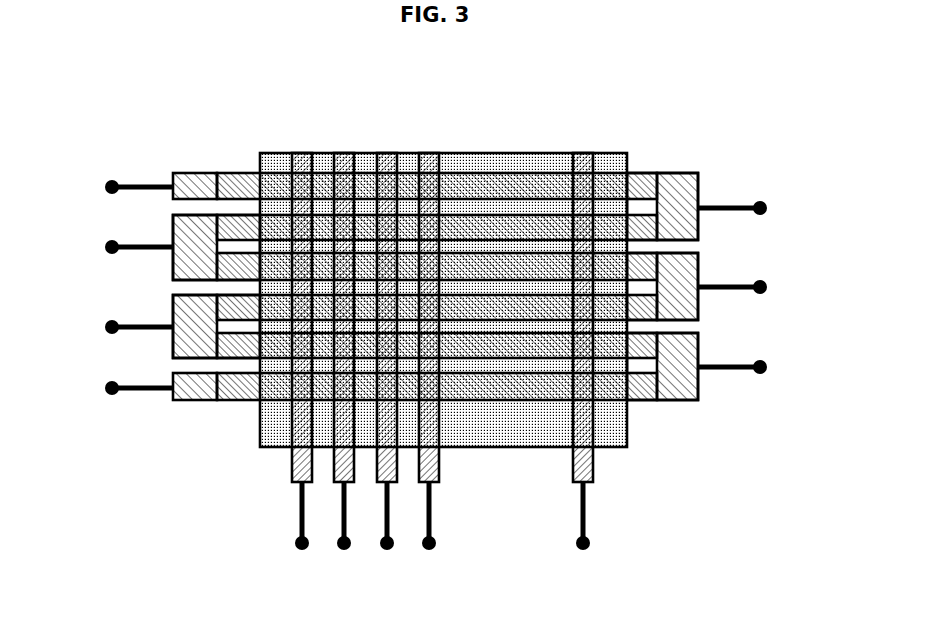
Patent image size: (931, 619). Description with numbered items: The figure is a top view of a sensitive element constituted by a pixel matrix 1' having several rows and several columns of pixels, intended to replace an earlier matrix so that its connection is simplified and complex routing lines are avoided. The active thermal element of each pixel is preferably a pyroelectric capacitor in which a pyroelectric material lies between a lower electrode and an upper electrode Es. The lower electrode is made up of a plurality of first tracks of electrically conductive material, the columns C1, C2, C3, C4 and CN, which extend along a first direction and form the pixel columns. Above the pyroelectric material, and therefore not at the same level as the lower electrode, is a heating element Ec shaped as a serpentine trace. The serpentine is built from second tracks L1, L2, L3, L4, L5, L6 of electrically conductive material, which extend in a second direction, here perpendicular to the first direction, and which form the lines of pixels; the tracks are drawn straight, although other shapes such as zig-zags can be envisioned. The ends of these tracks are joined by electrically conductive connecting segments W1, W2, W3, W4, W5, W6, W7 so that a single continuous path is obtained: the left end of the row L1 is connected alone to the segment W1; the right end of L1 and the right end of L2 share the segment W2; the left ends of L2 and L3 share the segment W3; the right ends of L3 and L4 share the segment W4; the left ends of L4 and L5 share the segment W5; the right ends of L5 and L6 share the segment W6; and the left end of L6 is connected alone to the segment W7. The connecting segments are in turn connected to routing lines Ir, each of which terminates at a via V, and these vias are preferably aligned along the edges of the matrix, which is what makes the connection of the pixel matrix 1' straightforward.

The pixel matrix 1' is at (435, 320).
The heating element Ec is at (262, 171).
The upper electrode Es is at (496, 432).
The connecting segment W1 is at (185, 196).
The connecting segment W2 is at (667, 217).
The connecting segment W3 is at (185, 256).
The connecting segment W4 is at (667, 296).
The connecting segment W5 is at (185, 336).
The connecting segment W6 is at (667, 376).
The connecting segment W7 is at (185, 396).
The track L1 is at (229, 196).
The track L2 is at (229, 237).
The track L3 is at (229, 276).
The track L4 is at (229, 317).
The track L5 is at (229, 355).
The track L6 is at (229, 396).
The lower electrode track C1 is at (294, 463).
The lower electrode track C2 is at (345, 462).
The lower electrode track C3 is at (388, 462).
The lower electrode track C4 is at (430, 462).
The lower electrode track CN is at (582, 463).
The via V is at (112, 180).
The routing line Ir is at (140, 185).